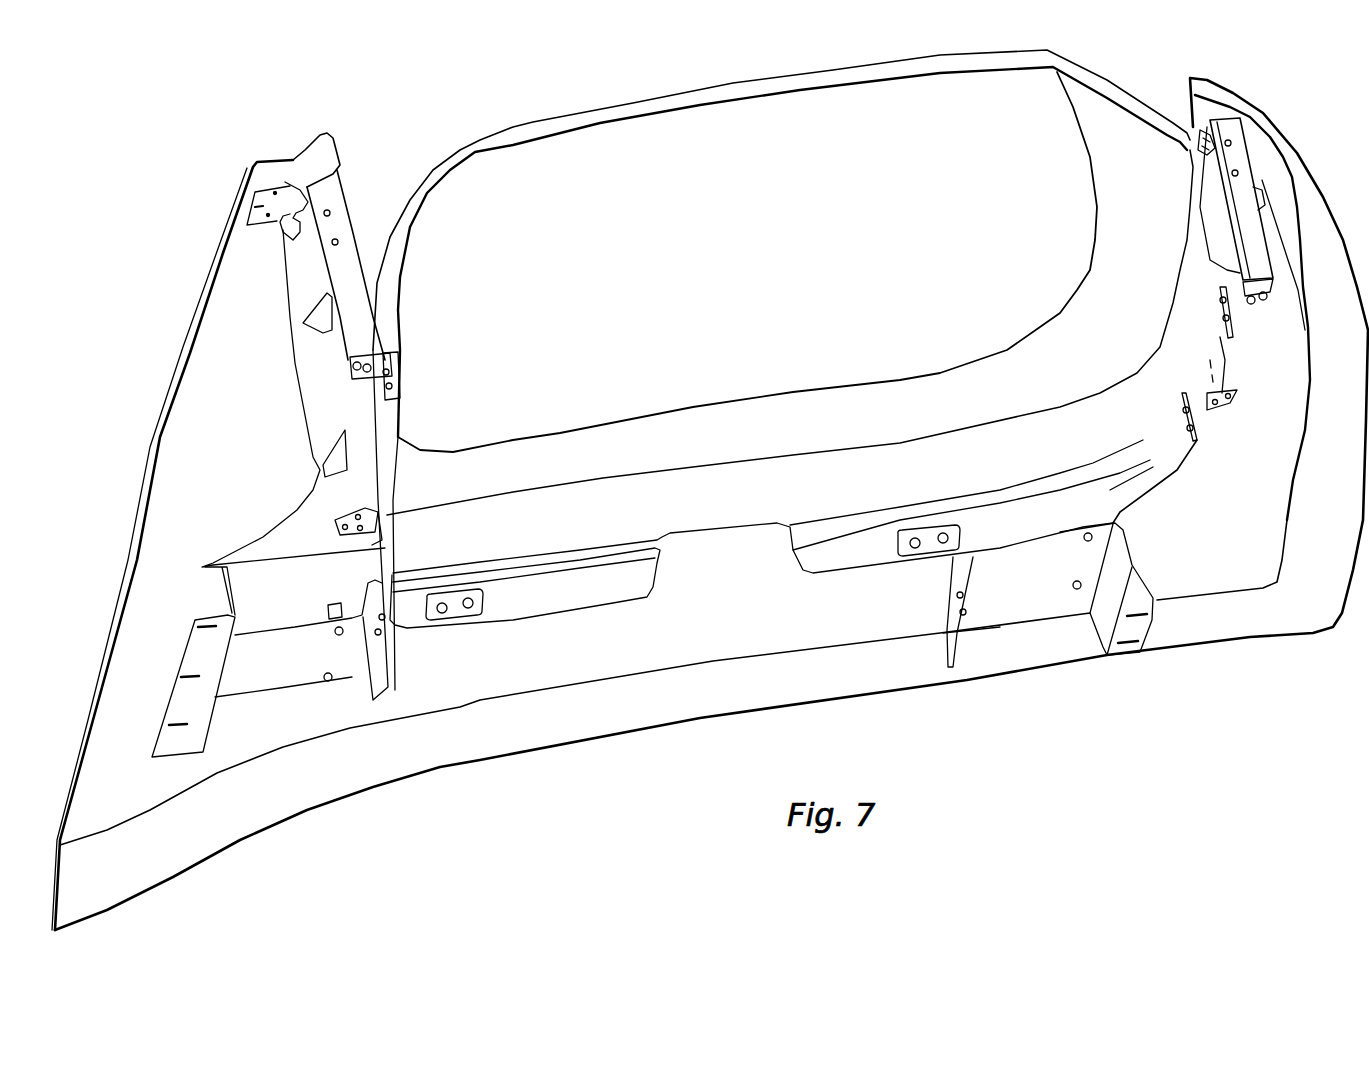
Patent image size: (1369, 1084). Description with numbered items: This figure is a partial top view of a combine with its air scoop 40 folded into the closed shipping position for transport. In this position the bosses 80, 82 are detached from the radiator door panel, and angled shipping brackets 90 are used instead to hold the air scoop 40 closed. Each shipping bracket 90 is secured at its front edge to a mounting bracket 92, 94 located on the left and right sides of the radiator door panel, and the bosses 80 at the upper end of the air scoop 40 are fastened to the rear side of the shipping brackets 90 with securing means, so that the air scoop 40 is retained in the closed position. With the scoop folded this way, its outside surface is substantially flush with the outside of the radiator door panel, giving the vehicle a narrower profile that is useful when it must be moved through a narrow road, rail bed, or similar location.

The air scoop 40 is at (533, 123).
The boss 80 is at (395, 370).
The boss 82 is at (372, 440).
The angled shipping bracket 90 is at (337, 227).
The mounting bracket 92 is at (295, 187).
The mounting bracket 94 is at (1188, 153).